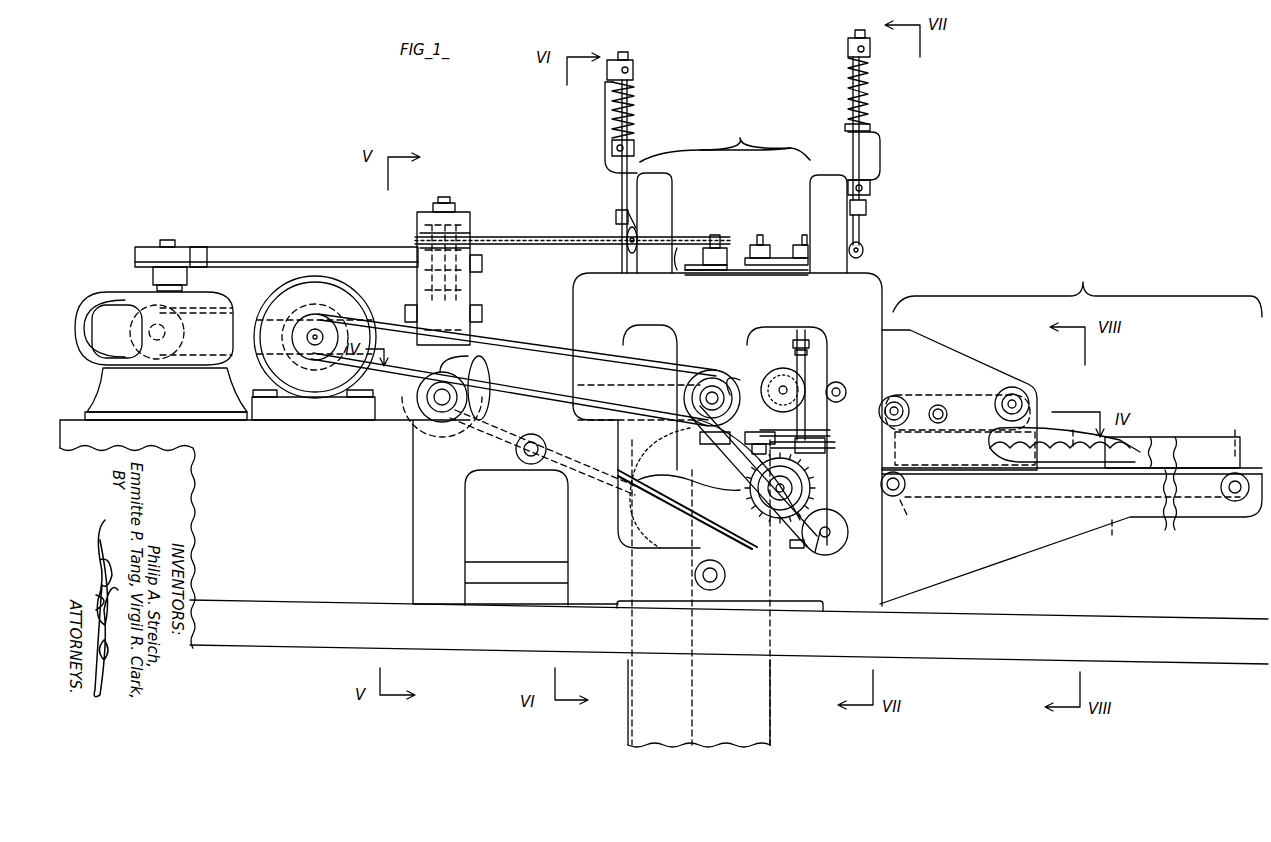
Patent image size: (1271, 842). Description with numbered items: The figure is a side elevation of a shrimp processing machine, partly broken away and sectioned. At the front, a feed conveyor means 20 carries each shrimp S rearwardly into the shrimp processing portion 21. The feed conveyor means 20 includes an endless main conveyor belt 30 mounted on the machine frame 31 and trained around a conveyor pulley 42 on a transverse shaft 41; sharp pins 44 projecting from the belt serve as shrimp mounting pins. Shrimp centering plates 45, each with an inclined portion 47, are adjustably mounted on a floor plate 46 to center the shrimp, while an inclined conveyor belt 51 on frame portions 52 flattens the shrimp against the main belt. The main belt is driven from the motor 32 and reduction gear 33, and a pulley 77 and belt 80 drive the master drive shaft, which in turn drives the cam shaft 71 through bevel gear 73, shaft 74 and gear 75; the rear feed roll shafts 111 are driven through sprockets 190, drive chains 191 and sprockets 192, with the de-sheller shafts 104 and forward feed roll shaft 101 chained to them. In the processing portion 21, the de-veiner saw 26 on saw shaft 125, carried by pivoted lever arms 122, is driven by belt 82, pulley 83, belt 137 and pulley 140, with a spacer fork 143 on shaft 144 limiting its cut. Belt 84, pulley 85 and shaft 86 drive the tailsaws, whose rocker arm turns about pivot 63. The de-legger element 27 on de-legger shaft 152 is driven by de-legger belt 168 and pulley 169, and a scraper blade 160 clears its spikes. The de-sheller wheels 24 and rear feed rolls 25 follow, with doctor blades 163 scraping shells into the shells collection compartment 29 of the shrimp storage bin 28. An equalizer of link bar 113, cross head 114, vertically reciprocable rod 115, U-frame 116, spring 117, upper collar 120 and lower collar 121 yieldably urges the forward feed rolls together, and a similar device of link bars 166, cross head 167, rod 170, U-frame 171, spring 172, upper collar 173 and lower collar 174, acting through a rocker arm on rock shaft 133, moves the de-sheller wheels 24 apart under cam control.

The feed conveyor means 20 is at (1077, 285).
The shrimp processing portion 21 is at (742, 195).
The de-sheller wheels 24 is at (765, 455).
The rear feed rolls 25 is at (700, 440).
The de-veiner saw 26 is at (847, 388).
The de-legger element 27 is at (760, 500).
The shrimp storage bin 28 is at (715, 484).
The shells collection compartment 29 is at (700, 538).
The endless main conveyor belt 30 is at (1168, 518).
The machine frame 31 is at (1058, 553).
The motor 32 is at (316, 283).
The reduction gear 33 is at (130, 305).
The transverse shaft 41 is at (890, 497).
The conveyor pulley 42 is at (908, 484).
The sharp pins 44 is at (1072, 480).
The shrimp centering plates 45 is at (1183, 440).
The floor plate 46 is at (1080, 475).
The inclined portion 47 is at (1140, 445).
The inclined conveyor belt 51 is at (966, 390).
The frame portions 52 is at (950, 355).
The pivot 63 is at (718, 578).
The cam shaft 71 is at (442, 422).
The bevel gear 73 is at (490, 380).
The shaft 74 is at (444, 200).
The gear 75 is at (484, 312).
The pulley 77 is at (418, 242).
The belt 80 is at (353, 257).
The belt 82 is at (520, 352).
The pulley 83 is at (705, 372).
The belt 84 is at (745, 438).
The pulley 85 is at (835, 545).
The shaft 86 is at (822, 540).
The forward feed roll shaft 101 is at (803, 235).
The de-sheller shafts 104 is at (760, 235).
The rear feed roll shafts 111 is at (712, 235).
The link bar 113 is at (860, 228).
The cross head 114 is at (866, 207).
The vertically reciprocable rod 115 is at (852, 137).
The U-frame 116 is at (880, 153).
The spring 117 is at (850, 72).
The upper collar 120 is at (848, 47).
The lower collar 121 is at (870, 188).
The lever arms 122 is at (646, 390).
The saw shaft 125 is at (808, 360).
The rock shaft 133 is at (531, 464).
The belt 137 is at (740, 378).
The pulley 140 is at (790, 388).
The spacer fork 143 is at (825, 415).
The shaft 144 is at (880, 398).
The de-legger shaft 152 is at (790, 488).
The scraper blade 160 is at (775, 545).
The doctor blade 163 is at (825, 443).
The link bars 166 is at (626, 246).
The cross head 167 is at (616, 218).
The de-legger belt 168 is at (505, 430).
The pulley 169 is at (748, 528).
The vertically reciprocable rod 170 is at (622, 193).
The U-frame 171 is at (606, 120).
The spring 172 is at (640, 115).
The upper collar 173 is at (635, 70).
The lower collar 174 is at (636, 148).
The sprockets 190 is at (468, 236).
The drive chains 191 is at (532, 236).
The sprockets 192 is at (733, 238).
The shrimp S is at (990, 448).